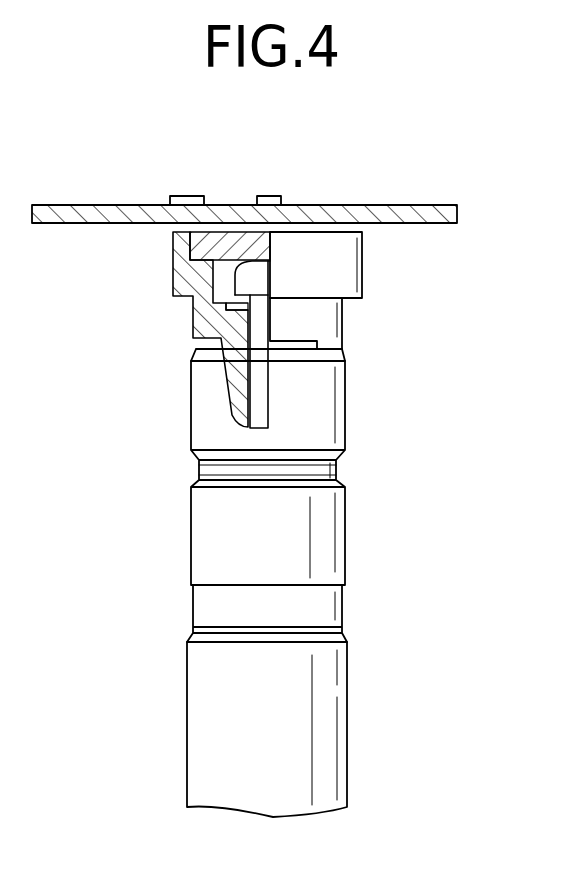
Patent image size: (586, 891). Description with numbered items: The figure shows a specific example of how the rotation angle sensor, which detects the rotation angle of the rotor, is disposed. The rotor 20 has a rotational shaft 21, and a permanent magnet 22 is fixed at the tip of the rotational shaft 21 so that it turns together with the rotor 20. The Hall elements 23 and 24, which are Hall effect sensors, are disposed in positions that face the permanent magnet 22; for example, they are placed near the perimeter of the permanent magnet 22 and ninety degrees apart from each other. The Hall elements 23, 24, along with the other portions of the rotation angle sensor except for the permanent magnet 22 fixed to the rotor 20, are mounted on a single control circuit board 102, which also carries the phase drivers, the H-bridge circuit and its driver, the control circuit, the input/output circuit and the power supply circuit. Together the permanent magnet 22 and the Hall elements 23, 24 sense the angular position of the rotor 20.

The rotor 20 is at (352, 385).
The rotational shaft 21 is at (340, 691).
The permanent magnet 22 is at (197, 248).
The Hall element 23 is at (185, 196).
The Hall element 24 is at (268, 196).
The control circuit board 102 is at (400, 210).